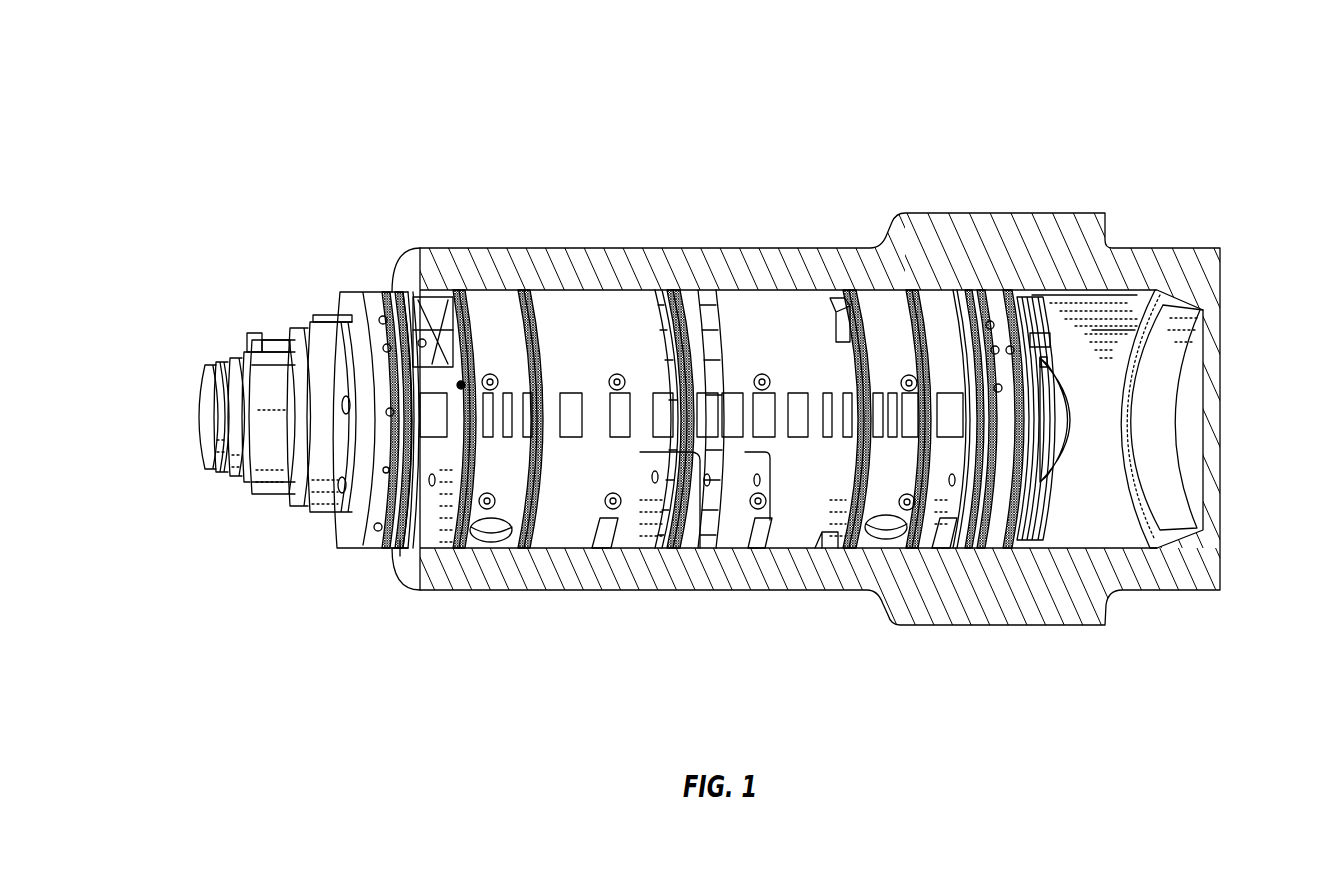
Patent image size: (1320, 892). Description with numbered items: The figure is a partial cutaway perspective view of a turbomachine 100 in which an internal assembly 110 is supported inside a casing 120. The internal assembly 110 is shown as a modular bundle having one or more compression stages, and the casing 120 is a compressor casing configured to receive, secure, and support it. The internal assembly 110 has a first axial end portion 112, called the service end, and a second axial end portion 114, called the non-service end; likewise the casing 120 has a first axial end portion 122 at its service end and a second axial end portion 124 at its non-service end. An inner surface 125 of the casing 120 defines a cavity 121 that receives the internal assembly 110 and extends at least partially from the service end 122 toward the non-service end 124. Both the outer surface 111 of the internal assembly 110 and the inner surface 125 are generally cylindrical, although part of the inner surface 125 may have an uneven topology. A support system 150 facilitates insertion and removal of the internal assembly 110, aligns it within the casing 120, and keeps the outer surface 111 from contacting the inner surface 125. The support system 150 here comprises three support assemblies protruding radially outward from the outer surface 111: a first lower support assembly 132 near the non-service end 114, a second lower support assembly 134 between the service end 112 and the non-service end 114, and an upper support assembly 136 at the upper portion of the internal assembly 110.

The turbomachine 100 is at (296, 97).
The internal assembly 110 is at (619, 349).
The outer surface 111 is at (393, 550).
The first axial end portion 112 is at (206, 407).
The second axial end portion 114 is at (1078, 423).
The casing 120 is at (913, 627).
The cavity 121 is at (1102, 318).
The first axial end portion 122 is at (406, 277).
The second axial end portion 124 is at (1193, 373).
The inner surface 125 is at (1006, 522).
The first lower support assembly 132 is at (1040, 542).
The second lower support assembly 134 is at (829, 537).
The upper support assembly 136 is at (830, 318).
The support system 150 is at (806, 646).